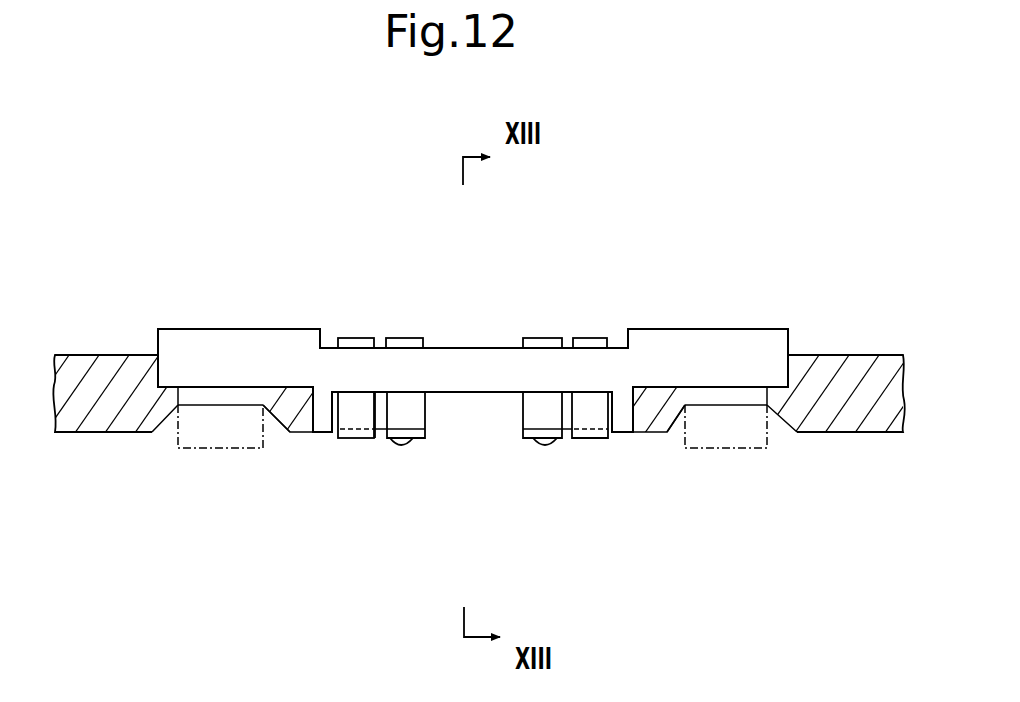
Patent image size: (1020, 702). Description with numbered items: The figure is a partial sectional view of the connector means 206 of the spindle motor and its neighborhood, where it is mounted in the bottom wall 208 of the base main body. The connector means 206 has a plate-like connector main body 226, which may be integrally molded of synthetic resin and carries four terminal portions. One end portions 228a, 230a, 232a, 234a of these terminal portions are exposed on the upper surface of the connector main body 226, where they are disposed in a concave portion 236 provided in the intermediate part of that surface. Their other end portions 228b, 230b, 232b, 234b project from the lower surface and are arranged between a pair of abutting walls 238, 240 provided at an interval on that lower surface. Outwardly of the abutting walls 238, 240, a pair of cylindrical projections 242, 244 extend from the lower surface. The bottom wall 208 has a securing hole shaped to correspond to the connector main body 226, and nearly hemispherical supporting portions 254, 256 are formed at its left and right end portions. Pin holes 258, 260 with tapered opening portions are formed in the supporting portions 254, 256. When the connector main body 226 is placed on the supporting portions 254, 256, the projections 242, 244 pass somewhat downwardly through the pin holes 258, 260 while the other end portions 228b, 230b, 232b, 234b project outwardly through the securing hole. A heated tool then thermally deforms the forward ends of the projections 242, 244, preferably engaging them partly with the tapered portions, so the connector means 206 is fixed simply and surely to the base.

The connector means 206 is at (243, 316).
The bottom wall 208 is at (109, 355).
The connector main body 226 is at (732, 333).
The one end portion of terminal portion 228a is at (353, 337).
The one end portion of terminal portion 230a is at (410, 337).
The one end portion of terminal portion 232a is at (550, 337).
The one end portion of terminal portion 234a is at (600, 337).
The other end portion of terminal portion 228b is at (358, 418).
The other end portion of terminal portion 230b is at (415, 412).
The other end portion of terminal portion 232b is at (540, 417).
The other end portion of terminal portion 234b is at (597, 417).
The concave portion 236 is at (472, 347).
The abutting wall 238 is at (322, 432).
The abutting wall 240 is at (630, 432).
The projection 242 is at (155, 430).
The projection 244 is at (749, 400).
The supporting portion 254 is at (298, 427).
The supporting portion 256 is at (650, 417).
The pin hole 258 is at (250, 400).
The pin hole 260 is at (705, 400).